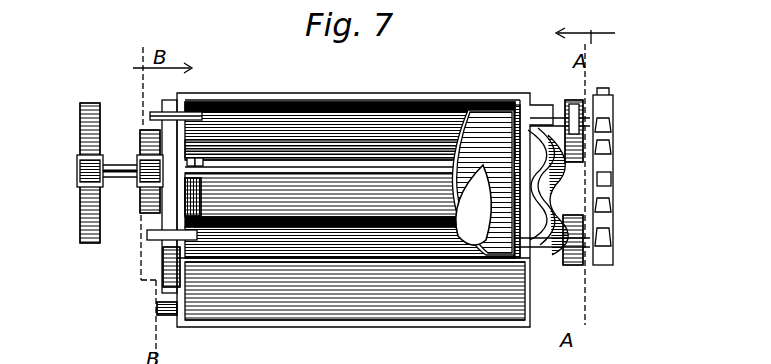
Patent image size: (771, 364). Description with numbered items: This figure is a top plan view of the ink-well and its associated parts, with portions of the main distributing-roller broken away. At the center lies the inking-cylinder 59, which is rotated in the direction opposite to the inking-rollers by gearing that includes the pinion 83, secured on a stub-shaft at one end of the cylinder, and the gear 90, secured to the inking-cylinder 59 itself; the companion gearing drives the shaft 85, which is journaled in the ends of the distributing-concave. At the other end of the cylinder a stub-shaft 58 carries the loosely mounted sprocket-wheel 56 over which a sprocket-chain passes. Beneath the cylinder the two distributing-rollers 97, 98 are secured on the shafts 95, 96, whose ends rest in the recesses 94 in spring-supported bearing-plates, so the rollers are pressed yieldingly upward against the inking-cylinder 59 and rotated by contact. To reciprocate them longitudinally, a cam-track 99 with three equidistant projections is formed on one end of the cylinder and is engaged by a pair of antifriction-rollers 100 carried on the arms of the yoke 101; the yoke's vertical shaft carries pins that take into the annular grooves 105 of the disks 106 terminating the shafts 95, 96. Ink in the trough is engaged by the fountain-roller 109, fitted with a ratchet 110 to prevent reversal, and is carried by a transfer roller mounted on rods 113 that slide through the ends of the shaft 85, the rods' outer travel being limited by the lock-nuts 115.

The sprocket-wheel 56 is at (602, 163).
The stub-shaft 58 is at (590, 148).
The inking-cylinder 59 is at (483, 182).
The pinion 83 is at (80, 208).
The shaft 85 is at (328, 177).
The gear 90 is at (140, 214).
The recesses 94 is at (582, 262).
The shaft 95 is at (153, 112).
The shaft 96 is at (153, 241).
The distributing-roller 97 is at (281, 117).
The distributing-roller 98 is at (327, 233).
The cam-track 99 is at (600, 180).
The antifriction-rollers 100 is at (603, 237).
The yoke 101 is at (562, 208).
The annular grooves 105 is at (582, 104).
The disks 106 is at (565, 104).
The fountain-roller 109 is at (400, 270).
The ratchet 110 is at (165, 291).
The rods 113 is at (203, 200).
The lock-nuts 115 is at (199, 158).